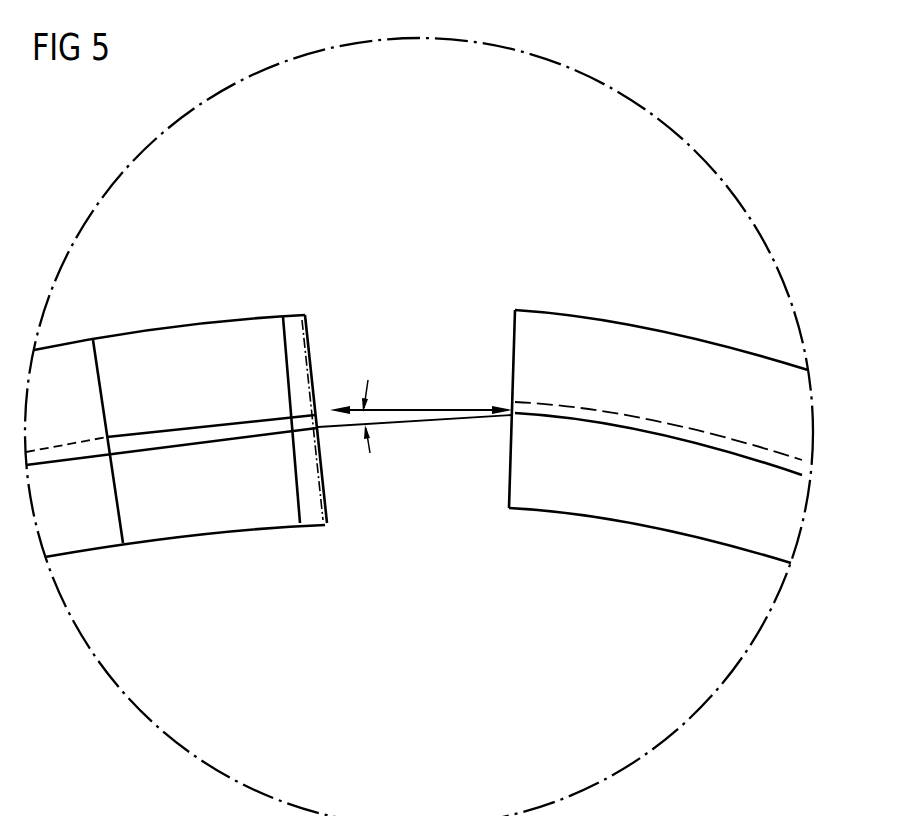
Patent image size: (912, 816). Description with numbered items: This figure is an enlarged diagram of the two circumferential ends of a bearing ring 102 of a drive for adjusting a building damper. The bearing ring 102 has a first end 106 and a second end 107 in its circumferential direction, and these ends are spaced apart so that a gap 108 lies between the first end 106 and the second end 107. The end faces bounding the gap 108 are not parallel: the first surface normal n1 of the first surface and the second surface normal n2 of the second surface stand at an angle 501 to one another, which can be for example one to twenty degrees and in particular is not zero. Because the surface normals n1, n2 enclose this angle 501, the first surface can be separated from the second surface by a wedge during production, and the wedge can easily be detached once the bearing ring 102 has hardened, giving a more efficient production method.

The bearing ring 102 is at (60, 370).
The first end 106 is at (567, 333).
The second end 107 is at (176, 409).
The gap 108 is at (474, 393).
The angle 501 is at (355, 418).
The first surface normal n1 is at (382, 410).
The second surface normal n2 is at (400, 420).